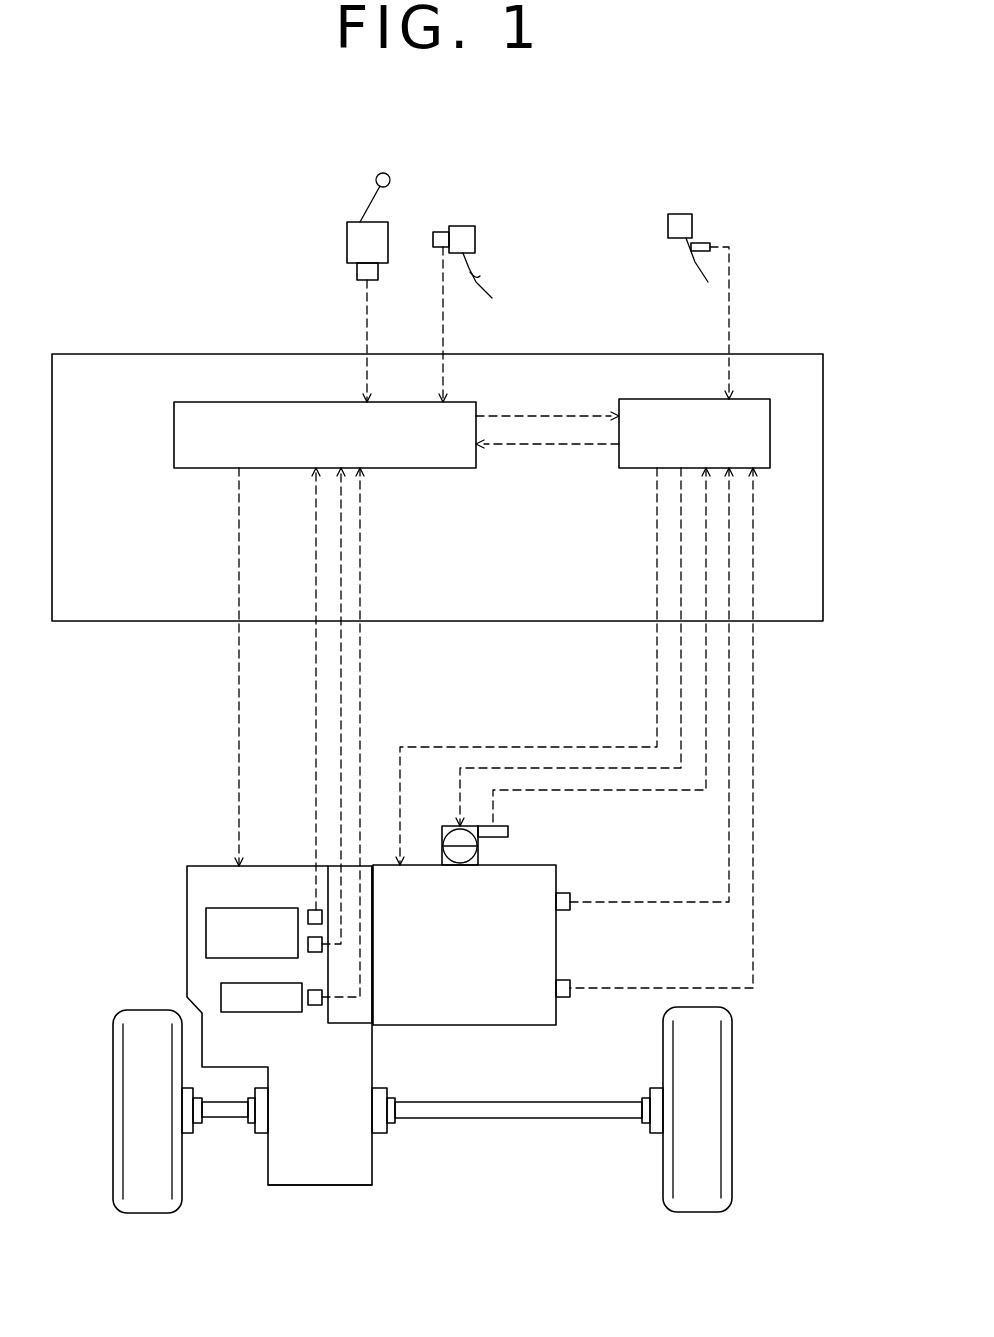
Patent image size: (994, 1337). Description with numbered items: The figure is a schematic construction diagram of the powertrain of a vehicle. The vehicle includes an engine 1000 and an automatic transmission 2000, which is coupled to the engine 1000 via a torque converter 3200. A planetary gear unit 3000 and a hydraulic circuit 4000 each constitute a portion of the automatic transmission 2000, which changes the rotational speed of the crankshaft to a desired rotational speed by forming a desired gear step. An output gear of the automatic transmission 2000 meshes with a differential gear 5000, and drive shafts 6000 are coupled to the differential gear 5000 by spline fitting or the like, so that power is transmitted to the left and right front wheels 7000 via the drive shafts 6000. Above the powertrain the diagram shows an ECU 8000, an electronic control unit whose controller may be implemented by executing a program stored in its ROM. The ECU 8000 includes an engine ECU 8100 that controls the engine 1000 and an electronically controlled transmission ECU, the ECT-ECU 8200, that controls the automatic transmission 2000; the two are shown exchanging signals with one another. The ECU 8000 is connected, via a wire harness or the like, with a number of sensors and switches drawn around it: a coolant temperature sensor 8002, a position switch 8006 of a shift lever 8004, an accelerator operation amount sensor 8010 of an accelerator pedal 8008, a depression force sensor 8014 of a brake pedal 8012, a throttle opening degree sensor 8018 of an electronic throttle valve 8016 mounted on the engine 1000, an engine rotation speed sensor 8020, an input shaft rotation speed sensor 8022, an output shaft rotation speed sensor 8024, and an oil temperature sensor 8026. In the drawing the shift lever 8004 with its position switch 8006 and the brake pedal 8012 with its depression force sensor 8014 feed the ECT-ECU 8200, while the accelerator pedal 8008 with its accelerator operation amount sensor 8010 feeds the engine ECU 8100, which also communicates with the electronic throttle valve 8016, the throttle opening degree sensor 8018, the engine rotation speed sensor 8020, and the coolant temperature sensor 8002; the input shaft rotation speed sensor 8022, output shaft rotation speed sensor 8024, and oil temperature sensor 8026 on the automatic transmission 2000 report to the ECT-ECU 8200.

The engine 1000 is at (510, 1027).
The automatic transmission 2000 is at (203, 866).
The planetary gear unit 3000 is at (206, 936).
The torque converter 3200 is at (345, 1024).
The hydraulic circuit 4000 is at (272, 1013).
The differential gear 5000 is at (320, 1187).
The drive shaft 6000 is at (232, 1119).
The front wheels 7000 is at (145, 1215).
The ECU 8000 is at (60, 354).
The coolant temperature sensor 8002 is at (563, 998).
The shift lever 8004 is at (367, 208).
The position switch 8006 is at (357, 269).
The accelerator pedal 8008 is at (683, 258).
The accelerator operation amount sensor 8010 is at (697, 241).
The brake pedal 8012 is at (467, 269).
The depression force sensor 8014 is at (442, 231).
The electronic throttle valve 8016 is at (480, 853).
The throttle opening degree sensor 8018 is at (508, 832).
The engine rotation speed sensor 8020 is at (562, 912).
The input shaft rotation speed sensor 8022 is at (308, 912).
The output shaft rotation speed sensor 8024 is at (308, 953).
The oil temperature sensor 8026 is at (316, 1005).
The engine ECU 8100 is at (753, 399).
The ECT-ECU 8200 is at (200, 402).